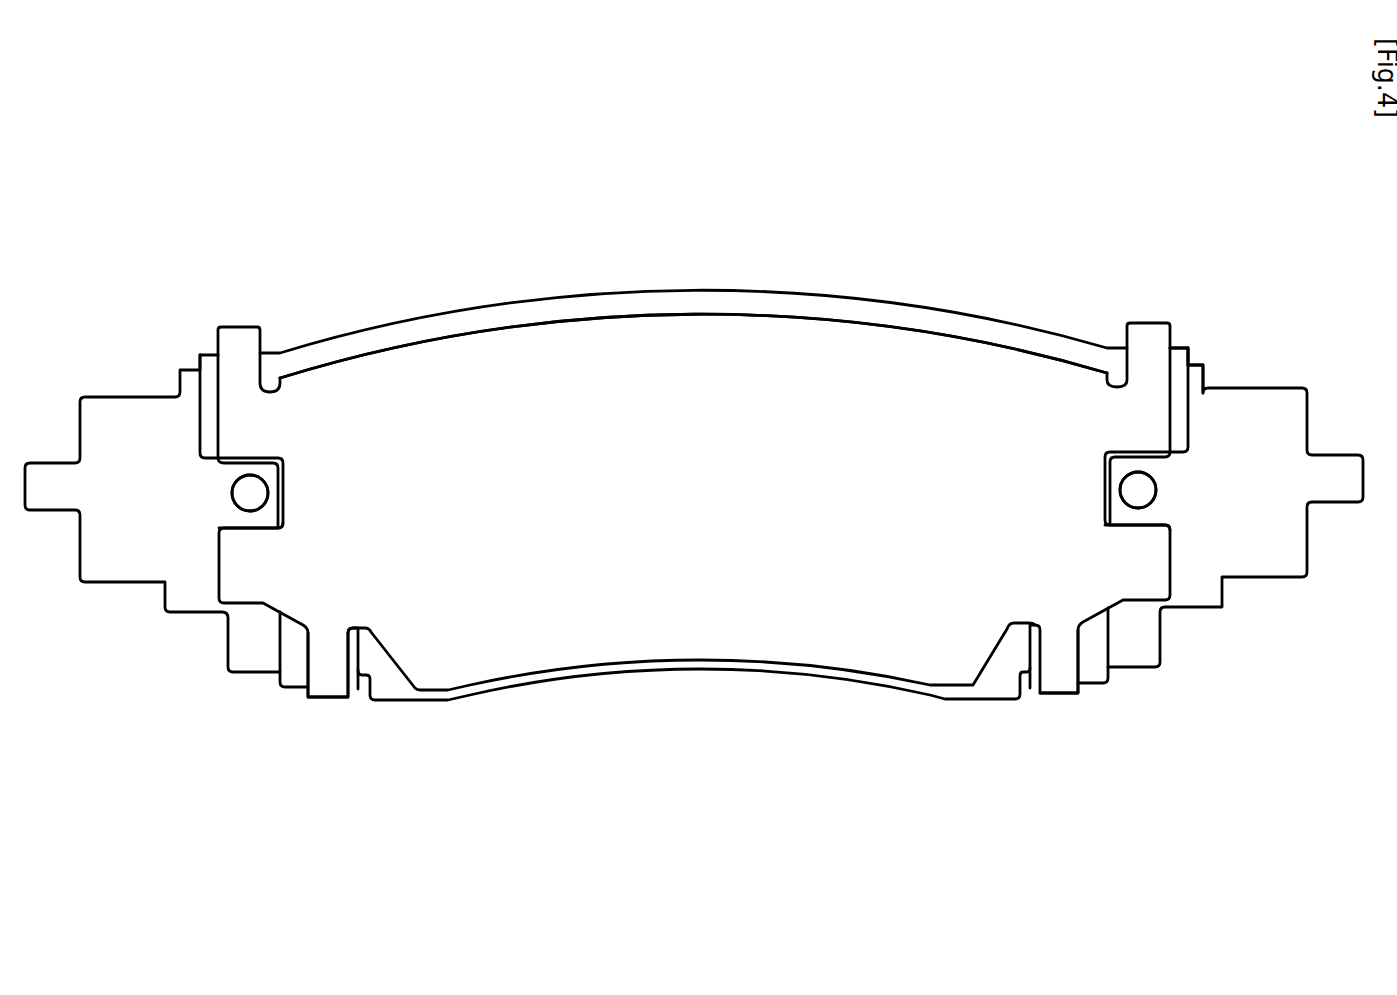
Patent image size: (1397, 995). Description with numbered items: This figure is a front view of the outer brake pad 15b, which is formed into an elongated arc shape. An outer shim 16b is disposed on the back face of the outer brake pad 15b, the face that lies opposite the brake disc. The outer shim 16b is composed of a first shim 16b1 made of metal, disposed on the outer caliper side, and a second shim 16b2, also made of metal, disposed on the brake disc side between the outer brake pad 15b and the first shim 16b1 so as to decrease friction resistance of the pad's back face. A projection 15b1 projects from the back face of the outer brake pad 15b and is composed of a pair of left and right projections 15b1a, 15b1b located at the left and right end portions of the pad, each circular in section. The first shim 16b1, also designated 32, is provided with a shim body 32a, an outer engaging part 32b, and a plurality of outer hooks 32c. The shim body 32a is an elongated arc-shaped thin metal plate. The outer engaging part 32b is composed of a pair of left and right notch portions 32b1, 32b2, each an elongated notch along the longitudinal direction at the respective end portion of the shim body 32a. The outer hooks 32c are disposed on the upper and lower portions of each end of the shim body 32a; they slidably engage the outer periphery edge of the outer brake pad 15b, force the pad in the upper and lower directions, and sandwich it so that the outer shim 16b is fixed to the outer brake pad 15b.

The outer brake pad 15b is at (803, 293).
The projection 15b1 is at (687, 407).
The left projection 15b1a is at (248, 493).
The right projection 15b1b is at (1148, 488).
The outer shim 16b is at (688, 313).
The first shim 16b1 is at (932, 357).
The second shim 16b2 is at (1182, 345).
The first shim 32 is at (694, 474).
The shim body 32a is at (500, 343).
The outer engaging part 32b is at (695, 515).
The left notch portion 32b1 is at (243, 525).
The right notch portion 32b2 is at (1152, 523).
The outer hooks 32c is at (245, 327).